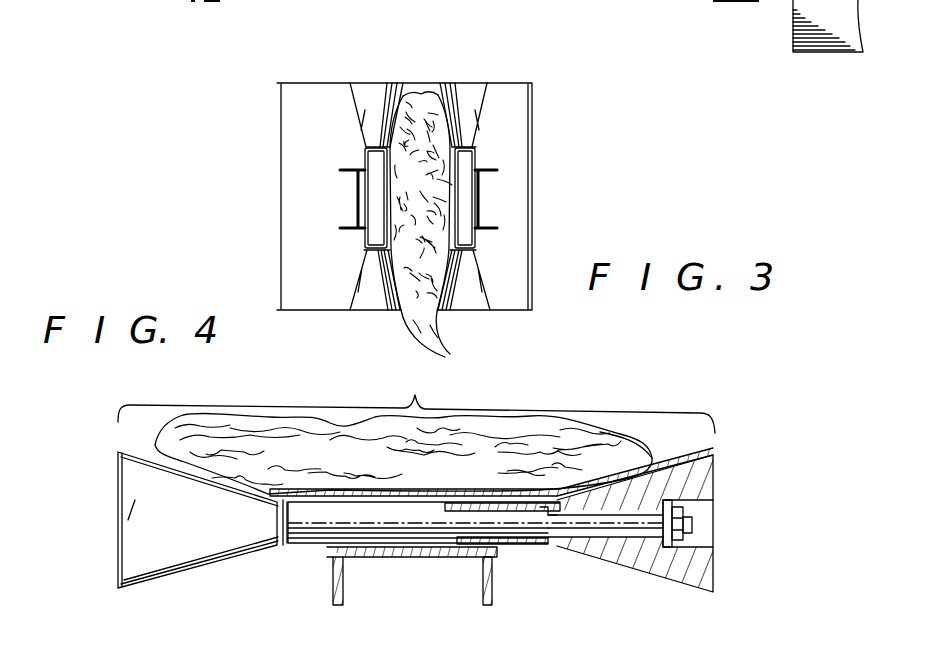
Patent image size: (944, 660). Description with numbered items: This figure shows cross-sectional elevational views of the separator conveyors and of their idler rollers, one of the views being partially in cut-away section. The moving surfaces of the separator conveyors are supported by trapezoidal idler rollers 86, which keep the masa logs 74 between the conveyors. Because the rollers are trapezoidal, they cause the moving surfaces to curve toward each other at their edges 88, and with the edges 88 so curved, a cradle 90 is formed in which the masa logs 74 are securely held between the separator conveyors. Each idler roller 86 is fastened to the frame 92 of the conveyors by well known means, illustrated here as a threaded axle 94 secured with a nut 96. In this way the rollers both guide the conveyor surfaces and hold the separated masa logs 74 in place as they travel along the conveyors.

In FIG. 3, the masa logs 74 is at (437, 197).
In FIG. 4, the masa logs 74 is at (648, 450).
In FIG. 3, the trapezoidal idler rollers 86 is at (382, 84).
In FIG. 3, the edges 88 is at (409, 96).
In FIG. 4, the cradle 90 is at (416, 431).
In FIG. 3, the frame 92 is at (489, 172).
In FIG. 4, the frame 92 is at (492, 598).
In FIG. 4, the threaded axle 94 is at (695, 527).
In FIG. 4, the nut 96 is at (697, 494).